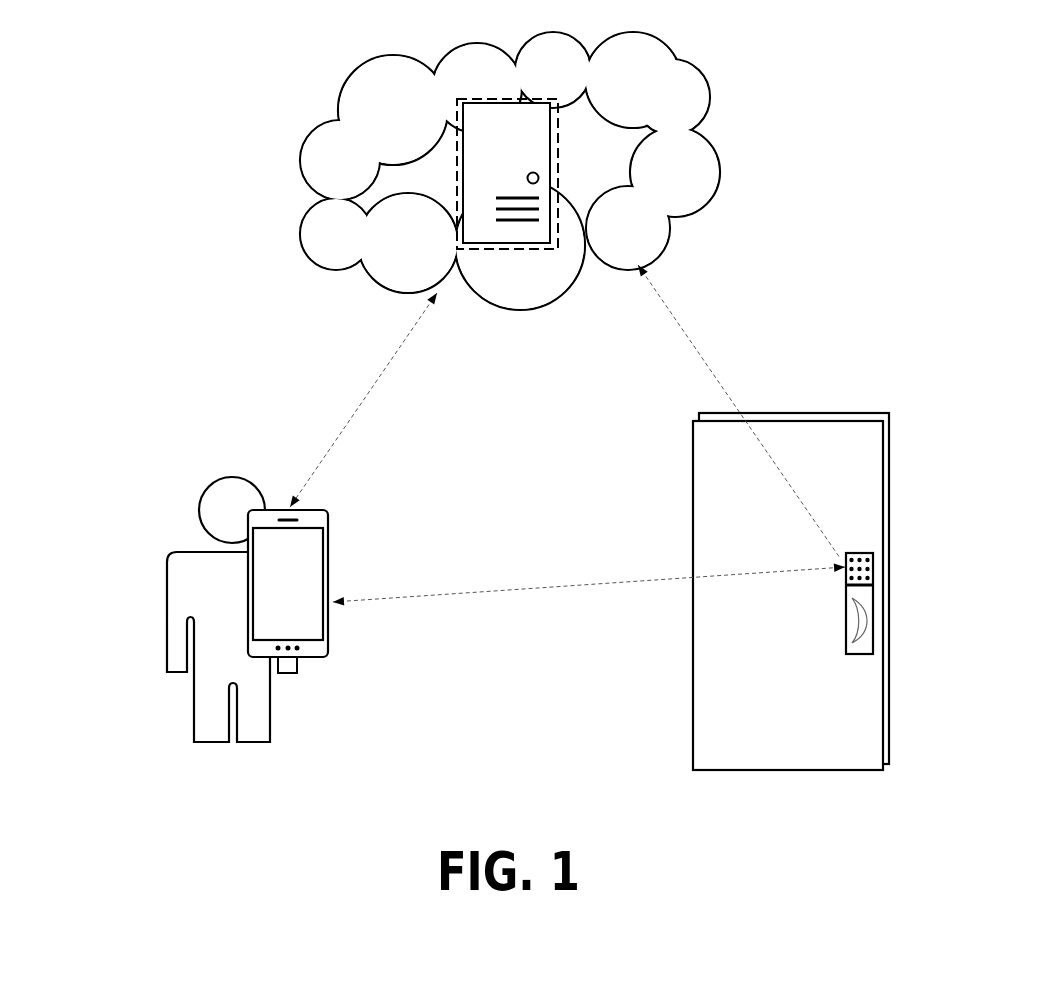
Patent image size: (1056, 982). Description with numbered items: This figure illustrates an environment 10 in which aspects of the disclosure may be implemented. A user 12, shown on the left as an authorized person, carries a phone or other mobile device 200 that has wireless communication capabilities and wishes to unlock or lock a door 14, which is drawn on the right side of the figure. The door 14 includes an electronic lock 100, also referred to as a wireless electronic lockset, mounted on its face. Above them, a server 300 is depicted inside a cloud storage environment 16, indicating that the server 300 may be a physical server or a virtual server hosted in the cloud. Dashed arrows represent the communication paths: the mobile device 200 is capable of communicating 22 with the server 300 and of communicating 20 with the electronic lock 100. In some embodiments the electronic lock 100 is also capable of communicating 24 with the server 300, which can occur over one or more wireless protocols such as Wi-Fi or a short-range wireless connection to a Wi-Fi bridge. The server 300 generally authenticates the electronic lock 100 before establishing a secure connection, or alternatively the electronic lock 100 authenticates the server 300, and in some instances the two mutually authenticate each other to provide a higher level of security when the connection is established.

The environment 10 is at (110, 838).
The user 12 is at (177, 563).
The door 14 is at (885, 430).
The cloud storage environment 16 is at (708, 92).
The communicating 20 is at (592, 585).
The communicating 22 is at (325, 452).
The communicating 24 is at (703, 358).
The electronic lock 100 is at (873, 557).
The mobile device 200 is at (325, 518).
The server 300 is at (542, 172).